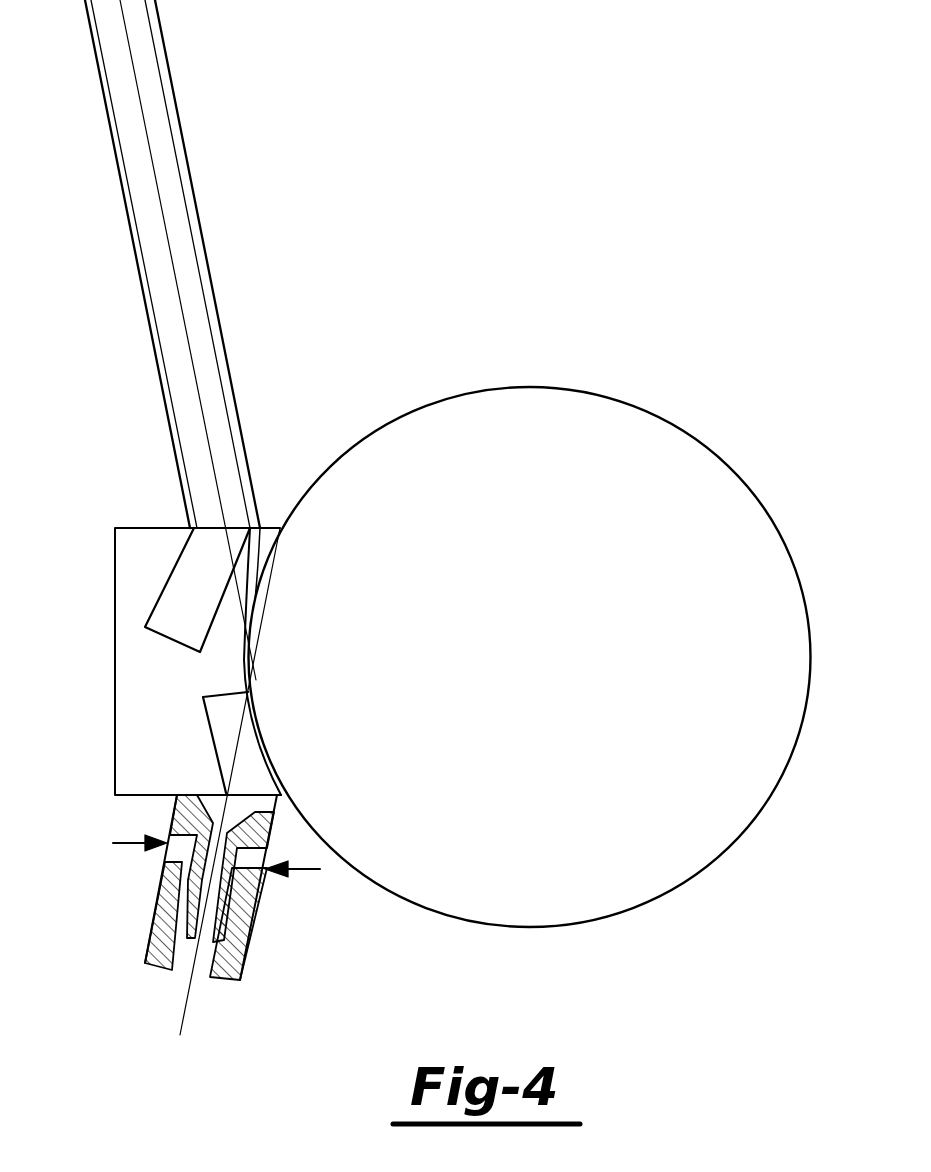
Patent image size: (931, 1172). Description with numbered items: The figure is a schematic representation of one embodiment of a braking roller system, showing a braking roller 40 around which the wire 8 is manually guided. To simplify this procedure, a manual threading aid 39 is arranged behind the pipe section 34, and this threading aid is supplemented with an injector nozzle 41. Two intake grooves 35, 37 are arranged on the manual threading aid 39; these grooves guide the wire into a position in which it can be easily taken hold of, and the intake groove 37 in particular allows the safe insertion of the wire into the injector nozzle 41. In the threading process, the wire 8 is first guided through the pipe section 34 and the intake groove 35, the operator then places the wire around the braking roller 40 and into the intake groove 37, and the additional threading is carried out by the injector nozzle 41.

The wire 8 is at (148, 148).
The pipe section 34 is at (205, 330).
The intake groove 35 is at (188, 575).
The intake groove 37 is at (253, 772).
The manual threading aid 39 is at (128, 686).
The braking roller 40 is at (765, 650).
The injector nozzle 41 is at (250, 913).